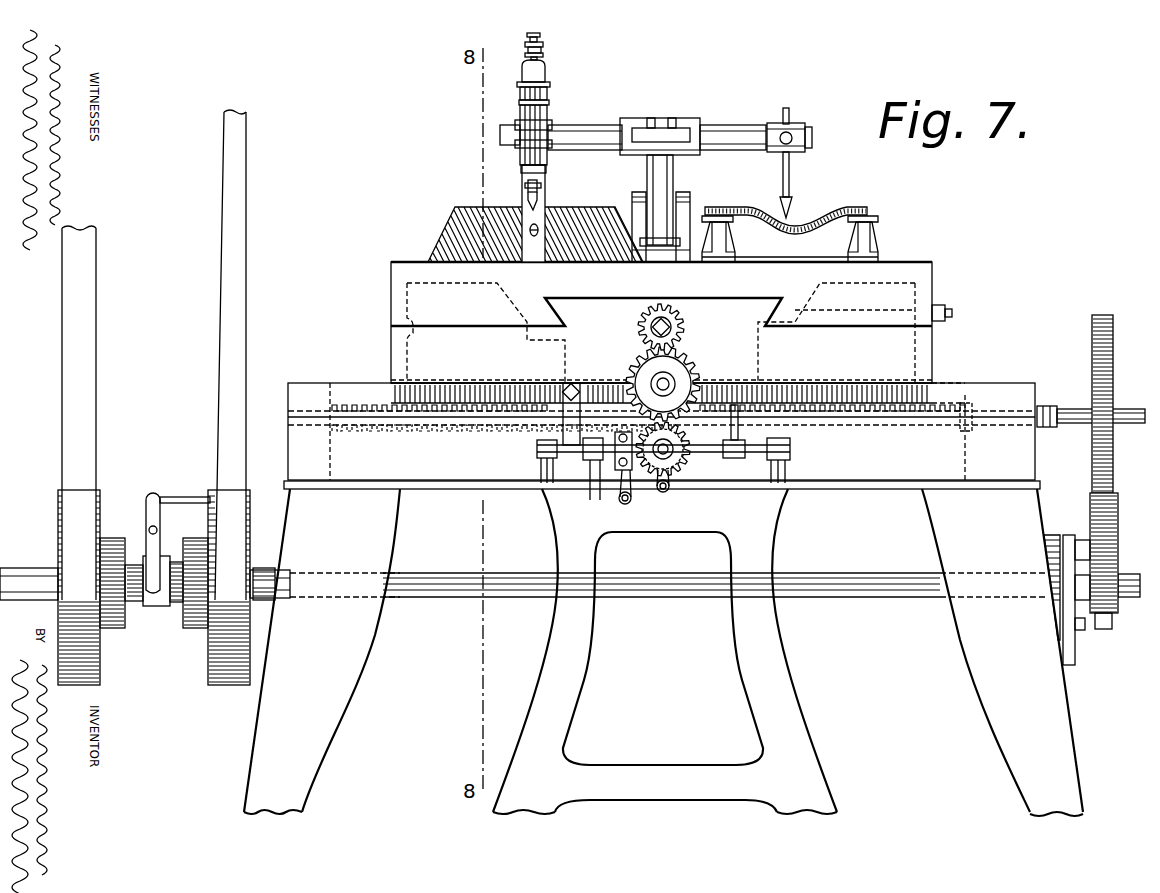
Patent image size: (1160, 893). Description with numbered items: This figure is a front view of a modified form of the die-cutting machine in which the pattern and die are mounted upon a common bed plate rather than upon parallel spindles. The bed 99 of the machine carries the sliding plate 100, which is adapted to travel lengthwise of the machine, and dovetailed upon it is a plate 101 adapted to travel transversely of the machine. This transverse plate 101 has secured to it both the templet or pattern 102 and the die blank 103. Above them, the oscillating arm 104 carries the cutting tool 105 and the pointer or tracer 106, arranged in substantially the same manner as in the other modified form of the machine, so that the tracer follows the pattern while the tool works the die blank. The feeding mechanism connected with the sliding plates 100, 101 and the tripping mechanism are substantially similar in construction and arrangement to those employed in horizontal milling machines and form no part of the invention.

The bed 99 is at (572, 463).
The sliding plate 100 is at (932, 356).
The plate 101 is at (932, 300).
The templet or pattern 102 is at (818, 210).
The die blank 103 is at (440, 236).
The oscillating arm 104 is at (676, 180).
The cutting tool 105 is at (546, 193).
The pointer or tracer 106 is at (789, 176).